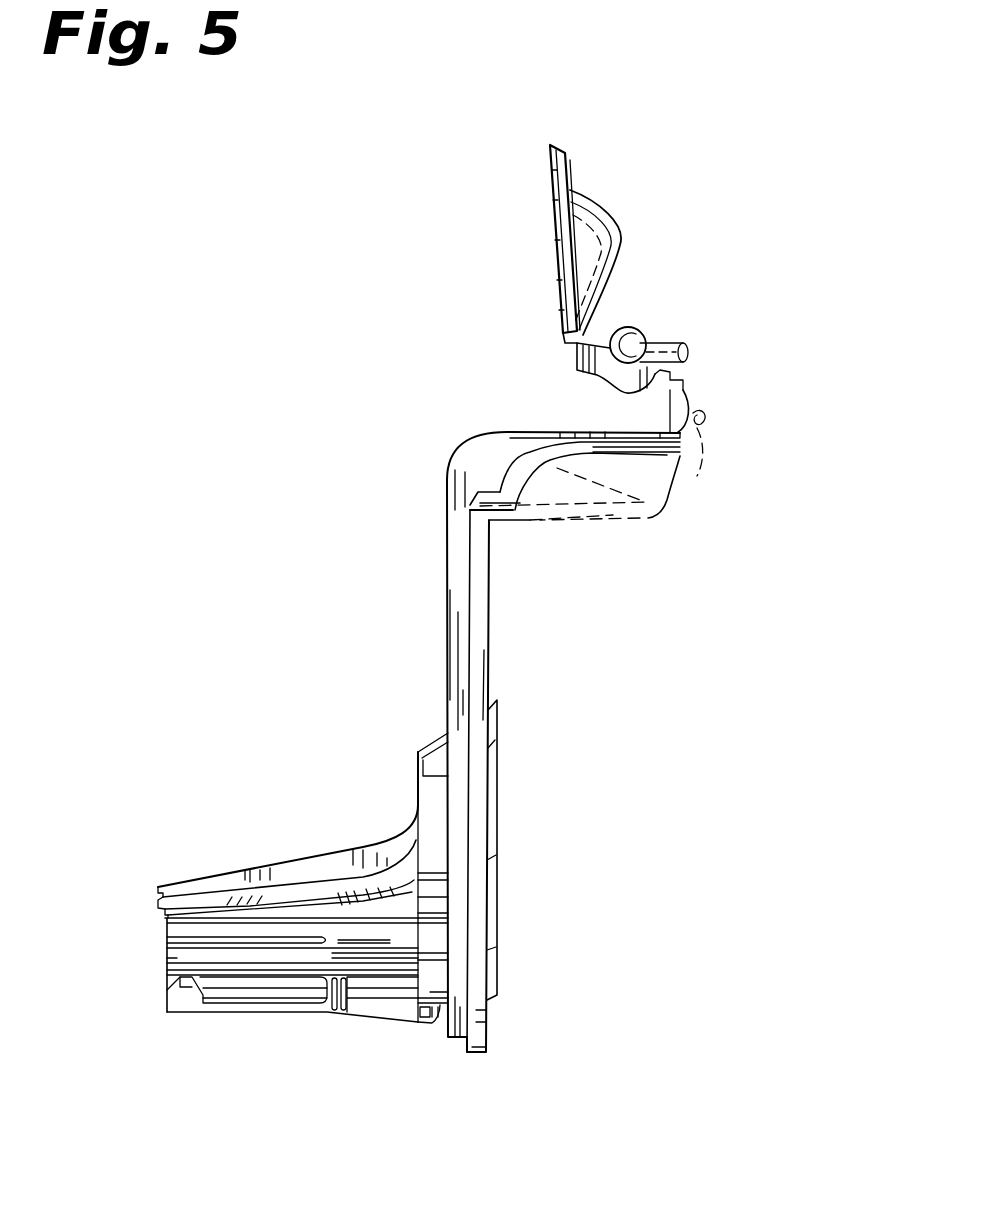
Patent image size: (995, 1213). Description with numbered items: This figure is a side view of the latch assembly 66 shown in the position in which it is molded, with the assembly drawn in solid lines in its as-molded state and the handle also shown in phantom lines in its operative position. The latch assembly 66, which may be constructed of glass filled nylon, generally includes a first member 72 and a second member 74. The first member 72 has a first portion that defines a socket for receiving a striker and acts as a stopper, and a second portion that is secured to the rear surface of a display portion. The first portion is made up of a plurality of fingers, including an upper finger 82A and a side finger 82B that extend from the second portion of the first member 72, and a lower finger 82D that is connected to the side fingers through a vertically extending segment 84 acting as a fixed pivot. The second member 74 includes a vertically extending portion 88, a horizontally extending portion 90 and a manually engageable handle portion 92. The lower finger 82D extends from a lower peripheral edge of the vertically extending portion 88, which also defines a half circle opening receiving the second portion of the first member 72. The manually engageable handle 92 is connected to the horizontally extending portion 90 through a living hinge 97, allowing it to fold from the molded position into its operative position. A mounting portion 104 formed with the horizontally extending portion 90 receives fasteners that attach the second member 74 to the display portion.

The latch assembly 66 is at (523, 131).
The manually engageable handle portion 92 is at (627, 517).
The mounting portion 104 is at (629, 328).
The living hinge 97 is at (692, 400).
The horizontally extending portion 90 is at (568, 431).
The vertically extending portion 88 is at (455, 642).
The second member 74 is at (491, 628).
The first member 72 is at (293, 861).
The upper finger 82A is at (218, 893).
The side finger 82B is at (173, 960).
The lower finger 82D is at (239, 998).
The vertically extending segment 84 is at (339, 997).